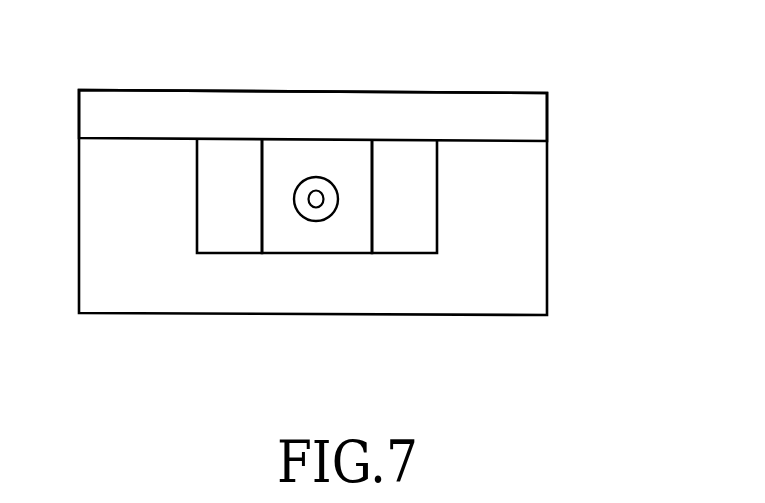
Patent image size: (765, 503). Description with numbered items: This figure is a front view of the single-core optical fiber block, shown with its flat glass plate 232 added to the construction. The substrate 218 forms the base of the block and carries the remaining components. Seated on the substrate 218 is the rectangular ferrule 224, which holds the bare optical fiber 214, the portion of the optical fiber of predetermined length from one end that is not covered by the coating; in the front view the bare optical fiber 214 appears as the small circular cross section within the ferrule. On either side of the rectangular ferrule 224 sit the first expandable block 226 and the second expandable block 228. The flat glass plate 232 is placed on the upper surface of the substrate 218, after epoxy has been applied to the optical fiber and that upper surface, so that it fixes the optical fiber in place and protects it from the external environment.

The substrate 218 is at (551, 212).
The flat glass plate 232 is at (397, 92).
The second expandable block 228 is at (228, 242).
The rectangular ferrule 224 is at (333, 246).
The first expandable block 226 is at (395, 246).
The bare optical fiber 214 is at (302, 218).